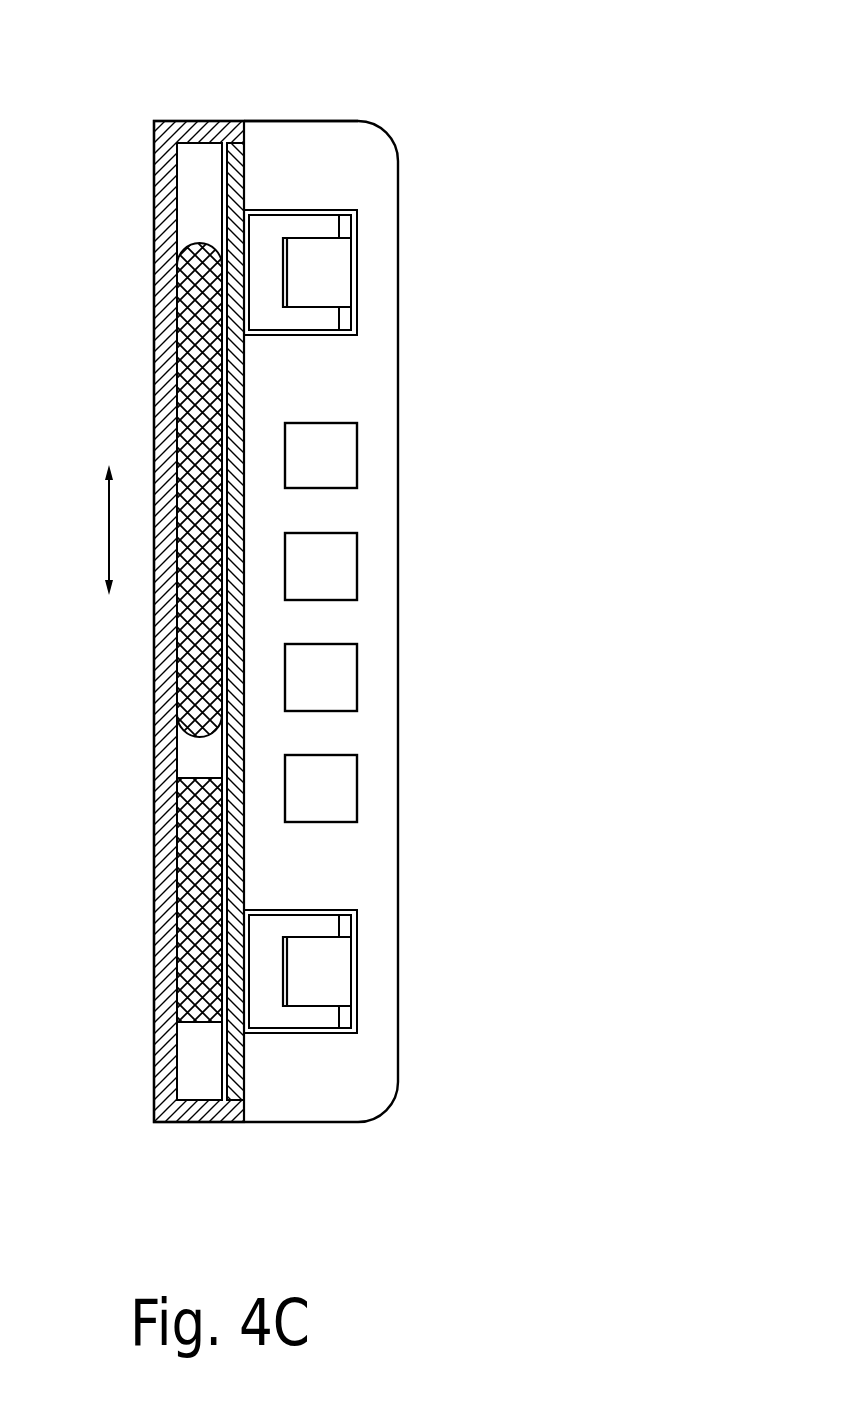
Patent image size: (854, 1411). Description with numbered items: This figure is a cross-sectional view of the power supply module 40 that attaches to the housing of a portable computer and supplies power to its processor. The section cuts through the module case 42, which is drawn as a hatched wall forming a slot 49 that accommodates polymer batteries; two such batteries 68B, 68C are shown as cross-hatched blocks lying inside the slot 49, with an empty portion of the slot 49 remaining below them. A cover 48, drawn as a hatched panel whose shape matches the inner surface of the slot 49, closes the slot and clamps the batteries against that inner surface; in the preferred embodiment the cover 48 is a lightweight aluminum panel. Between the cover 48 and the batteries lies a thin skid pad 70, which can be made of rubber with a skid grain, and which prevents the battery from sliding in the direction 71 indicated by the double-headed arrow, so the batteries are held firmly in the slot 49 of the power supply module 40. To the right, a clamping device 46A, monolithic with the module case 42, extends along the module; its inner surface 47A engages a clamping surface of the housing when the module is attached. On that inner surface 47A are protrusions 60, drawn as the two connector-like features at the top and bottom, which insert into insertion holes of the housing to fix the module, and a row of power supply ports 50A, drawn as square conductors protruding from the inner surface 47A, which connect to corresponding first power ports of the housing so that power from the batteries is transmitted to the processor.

The power supply module 40 is at (413, 65).
The module case 42 is at (167, 812).
The clamping device 46A is at (340, 120).
The inner surface 47A is at (388, 625).
The cover 48 is at (237, 155).
The slot 49 is at (190, 1067).
The power supply port 50A is at (337, 469).
The protrusion 60 is at (334, 286).
The battery 68B is at (183, 437).
The battery 68C is at (183, 938).
The skid pad 70 is at (222, 178).
The direction 71 is at (86, 530).